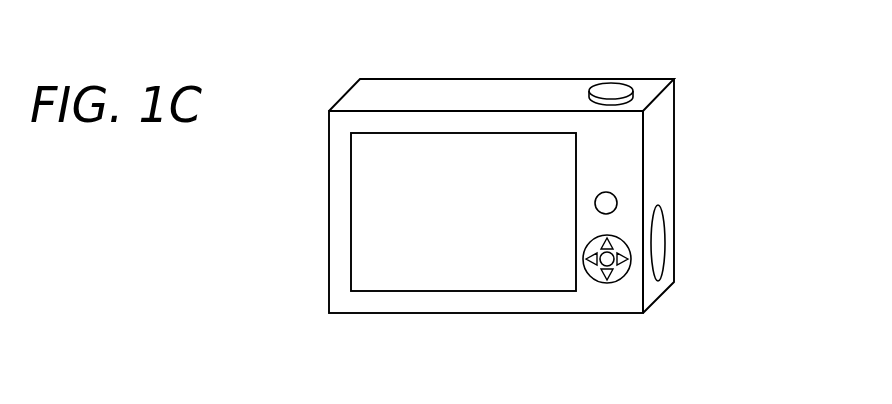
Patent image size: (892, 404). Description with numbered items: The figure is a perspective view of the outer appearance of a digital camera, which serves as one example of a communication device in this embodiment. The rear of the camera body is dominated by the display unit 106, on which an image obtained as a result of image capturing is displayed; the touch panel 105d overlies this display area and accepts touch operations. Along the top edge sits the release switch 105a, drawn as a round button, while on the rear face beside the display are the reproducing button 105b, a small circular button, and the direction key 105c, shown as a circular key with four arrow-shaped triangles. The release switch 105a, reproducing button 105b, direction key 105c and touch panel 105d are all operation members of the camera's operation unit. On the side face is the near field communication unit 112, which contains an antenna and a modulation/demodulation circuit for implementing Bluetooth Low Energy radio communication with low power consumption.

The release switch 105a is at (618, 93).
The reproducing button 105b is at (617, 200).
The direction key 105c is at (615, 273).
The touch panel 105d is at (393, 148).
The display unit 106 is at (508, 133).
The near field communication unit 112 is at (655, 238).